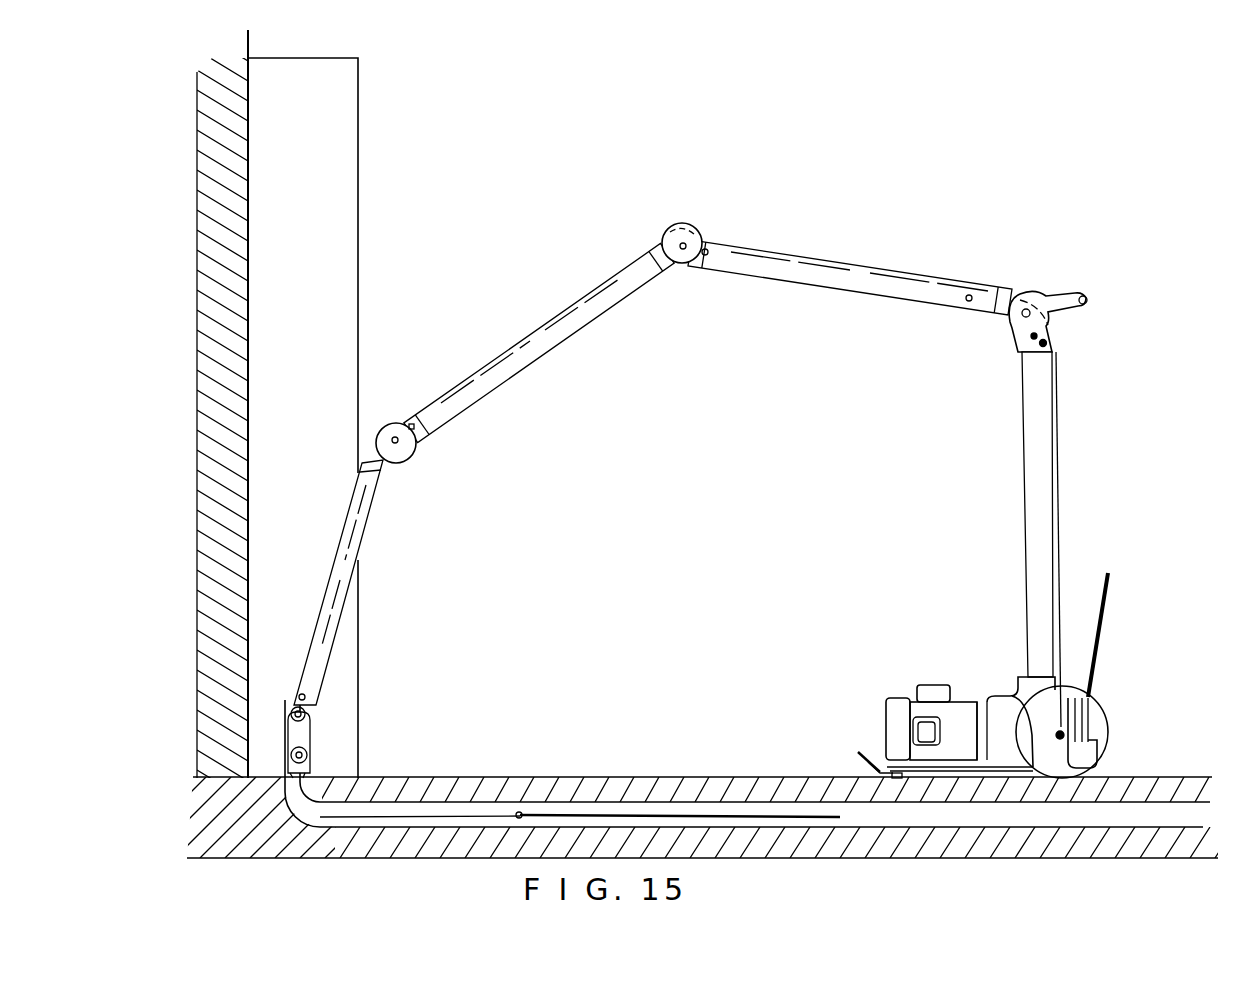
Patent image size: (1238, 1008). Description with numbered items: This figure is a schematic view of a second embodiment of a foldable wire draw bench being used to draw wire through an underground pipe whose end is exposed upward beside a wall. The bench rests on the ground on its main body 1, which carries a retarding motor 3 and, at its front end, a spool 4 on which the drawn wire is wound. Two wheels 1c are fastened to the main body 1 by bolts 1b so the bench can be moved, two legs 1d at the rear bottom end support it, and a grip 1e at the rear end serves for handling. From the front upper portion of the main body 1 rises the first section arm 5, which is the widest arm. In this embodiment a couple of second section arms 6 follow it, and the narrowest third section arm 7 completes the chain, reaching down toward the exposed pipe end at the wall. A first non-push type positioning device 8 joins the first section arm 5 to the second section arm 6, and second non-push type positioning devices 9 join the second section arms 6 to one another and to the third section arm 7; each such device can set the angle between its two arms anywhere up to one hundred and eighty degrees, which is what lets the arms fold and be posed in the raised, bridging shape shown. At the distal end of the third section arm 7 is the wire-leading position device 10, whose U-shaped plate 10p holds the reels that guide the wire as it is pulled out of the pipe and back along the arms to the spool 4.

The main body 1 is at (933, 762).
The bolt 1b is at (1060, 733).
The wheel 1c is at (1103, 741).
The leg 1d is at (893, 776).
The grip 1e is at (868, 755).
The retarding motor 3 is at (945, 710).
The spool 4 is at (1093, 700).
The first section arm 5 is at (1043, 494).
The second section arm 6 is at (576, 318).
The third section arm 7 is at (352, 545).
The first non-push type positioning device 8 is at (1043, 322).
The second non-push type positioning device 9 is at (390, 432).
The wire-leading position device 10 is at (300, 737).
The U-shaped plate 10p is at (312, 773).